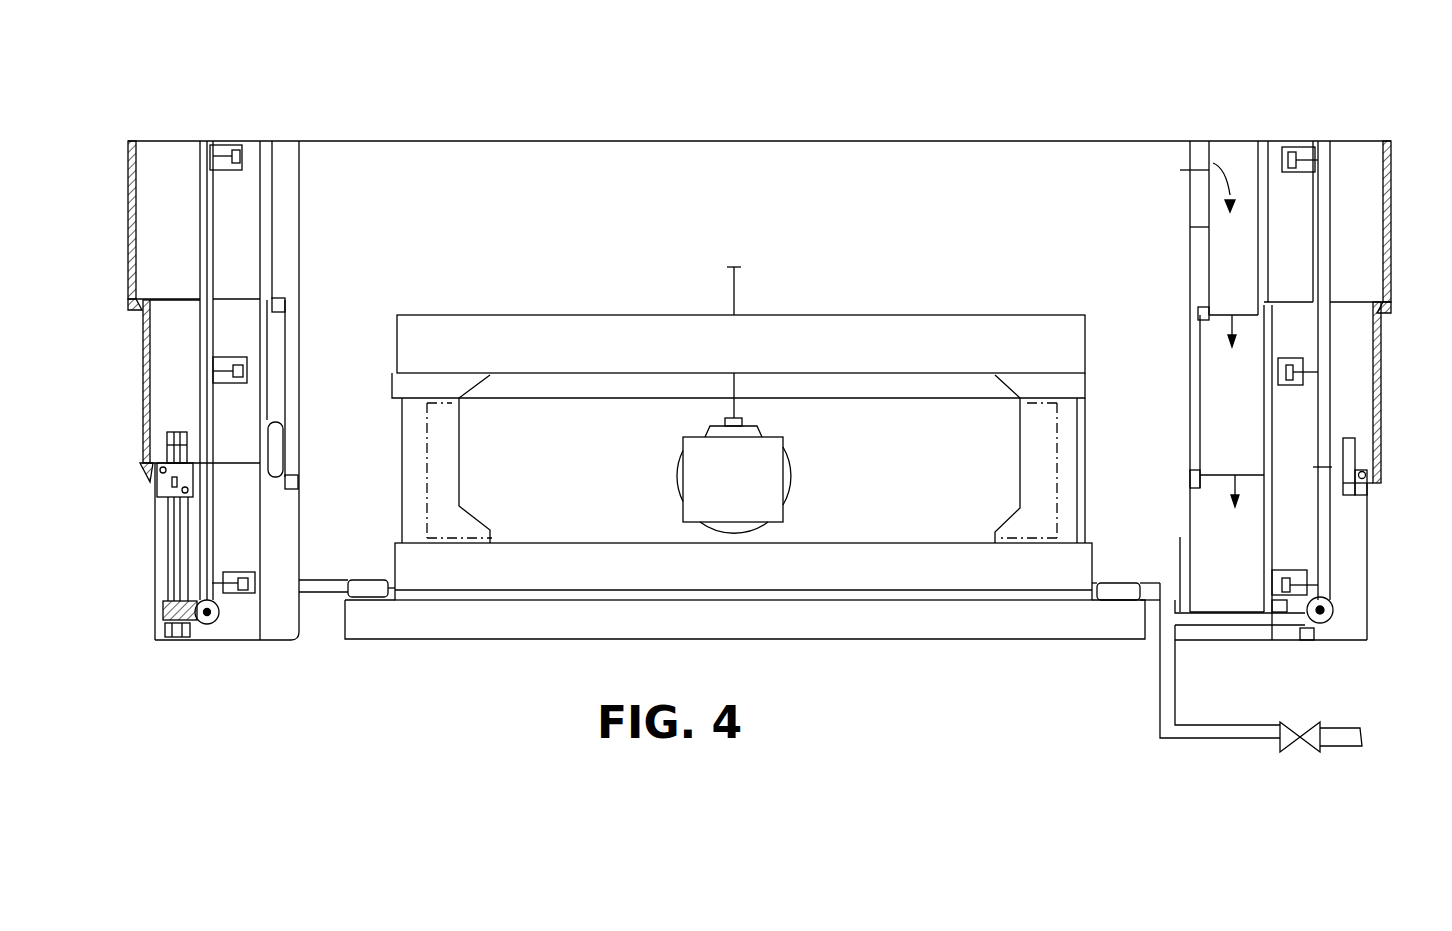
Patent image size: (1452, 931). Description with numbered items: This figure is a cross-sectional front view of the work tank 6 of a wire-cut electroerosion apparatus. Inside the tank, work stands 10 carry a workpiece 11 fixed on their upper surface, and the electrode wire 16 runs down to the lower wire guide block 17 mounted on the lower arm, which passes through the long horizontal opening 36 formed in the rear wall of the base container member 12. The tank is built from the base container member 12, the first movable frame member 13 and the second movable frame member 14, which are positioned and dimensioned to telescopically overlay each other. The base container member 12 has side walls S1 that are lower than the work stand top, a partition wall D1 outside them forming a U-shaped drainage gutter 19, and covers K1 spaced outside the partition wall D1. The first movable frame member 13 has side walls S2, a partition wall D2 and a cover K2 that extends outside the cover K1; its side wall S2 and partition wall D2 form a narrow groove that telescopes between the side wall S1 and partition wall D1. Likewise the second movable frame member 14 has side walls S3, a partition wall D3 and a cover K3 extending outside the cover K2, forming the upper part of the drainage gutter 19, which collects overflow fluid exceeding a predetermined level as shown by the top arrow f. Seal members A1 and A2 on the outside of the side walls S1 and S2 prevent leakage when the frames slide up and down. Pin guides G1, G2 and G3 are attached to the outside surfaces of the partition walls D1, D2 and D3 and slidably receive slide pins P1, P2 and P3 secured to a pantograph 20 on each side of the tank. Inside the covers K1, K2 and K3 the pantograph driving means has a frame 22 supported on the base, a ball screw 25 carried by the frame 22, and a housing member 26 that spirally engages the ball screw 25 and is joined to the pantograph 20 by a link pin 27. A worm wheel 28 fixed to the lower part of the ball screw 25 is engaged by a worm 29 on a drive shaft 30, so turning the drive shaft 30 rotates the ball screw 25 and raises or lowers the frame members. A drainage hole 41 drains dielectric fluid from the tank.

The work tank 6 is at (1096, 132).
The work stand 10 is at (410, 452).
The workpiece 11 is at (964, 315).
The base container member 12 is at (1367, 580).
The first movable frame member 13 is at (1381, 410).
The second movable frame member 14 is at (1404, 306).
The electrode wire 16 is at (740, 268).
The lower wire guide block 17 is at (785, 445).
The drainage gutter 19 is at (280, 625).
The pantograph 20 is at (200, 216).
The frame 22 is at (160, 582).
The ball screw 25 is at (170, 515).
The housing member 26 is at (157, 470).
The link pin 27 is at (187, 432).
The worm wheel 28 is at (163, 612).
The worm 29 is at (204, 624).
The drive shaft 30 is at (212, 624).
The horizontal opening 36 is at (1057, 452).
The drainage hole 41 is at (1172, 598).
The cover K1 is at (155, 548).
The cover K2 is at (143, 378).
The cover K3 is at (128, 222).
The side wall S1 is at (299, 556).
The side wall S2 is at (285, 386).
The side wall S3 is at (272, 213).
The partition wall D1 is at (262, 520).
The partition wall D2 is at (283, 426).
The partition wall D3 is at (1258, 280).
The seal member A1 is at (298, 482).
The seal member A2 is at (285, 300).
The pin guide G1 is at (236, 572).
The pin guide G2 is at (232, 383).
The pin guide G3 is at (230, 170).
The slide pin P1 is at (236, 593).
The slide pin P2 is at (228, 357).
The slide pin P3 is at (220, 145).